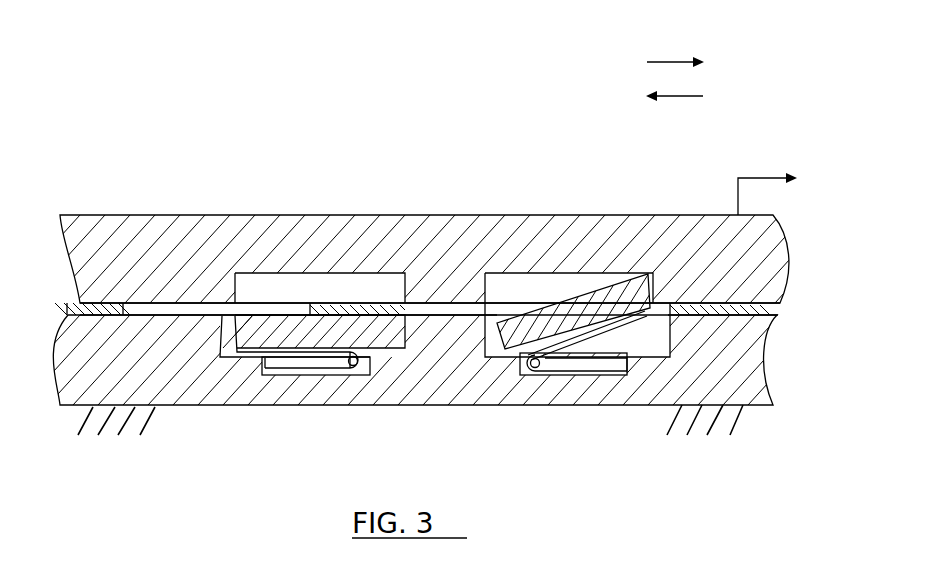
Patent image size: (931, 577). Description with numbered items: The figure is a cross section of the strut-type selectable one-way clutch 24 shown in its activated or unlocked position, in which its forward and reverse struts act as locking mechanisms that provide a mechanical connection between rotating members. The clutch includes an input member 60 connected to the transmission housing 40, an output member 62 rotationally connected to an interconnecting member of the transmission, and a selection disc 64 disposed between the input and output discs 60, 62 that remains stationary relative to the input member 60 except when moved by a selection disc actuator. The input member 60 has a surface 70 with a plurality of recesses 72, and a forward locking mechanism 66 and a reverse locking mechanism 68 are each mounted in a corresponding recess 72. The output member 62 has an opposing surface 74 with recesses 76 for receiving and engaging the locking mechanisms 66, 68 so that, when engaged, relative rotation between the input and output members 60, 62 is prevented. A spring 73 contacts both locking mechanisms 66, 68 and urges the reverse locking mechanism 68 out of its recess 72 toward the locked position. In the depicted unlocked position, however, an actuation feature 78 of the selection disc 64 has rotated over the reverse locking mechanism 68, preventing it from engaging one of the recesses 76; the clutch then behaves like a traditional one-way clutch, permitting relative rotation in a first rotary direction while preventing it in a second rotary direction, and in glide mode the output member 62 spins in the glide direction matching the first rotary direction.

The selectable one-way clutch 24 is at (112, 165).
The transmission housing 40 is at (85, 423).
The input member 60 is at (735, 375).
The output member 62 is at (760, 260).
The selection disc 64 is at (140, 302).
The forward locking mechanism 66 is at (580, 285).
The reverse locking mechanism 68 is at (278, 305).
The surface 70 is at (213, 312).
The recess 72 is at (632, 352).
The spring 73 is at (548, 368).
The surface 74 is at (431, 308).
The recess 76 is at (258, 282).
The actuation feature 78 is at (340, 308).